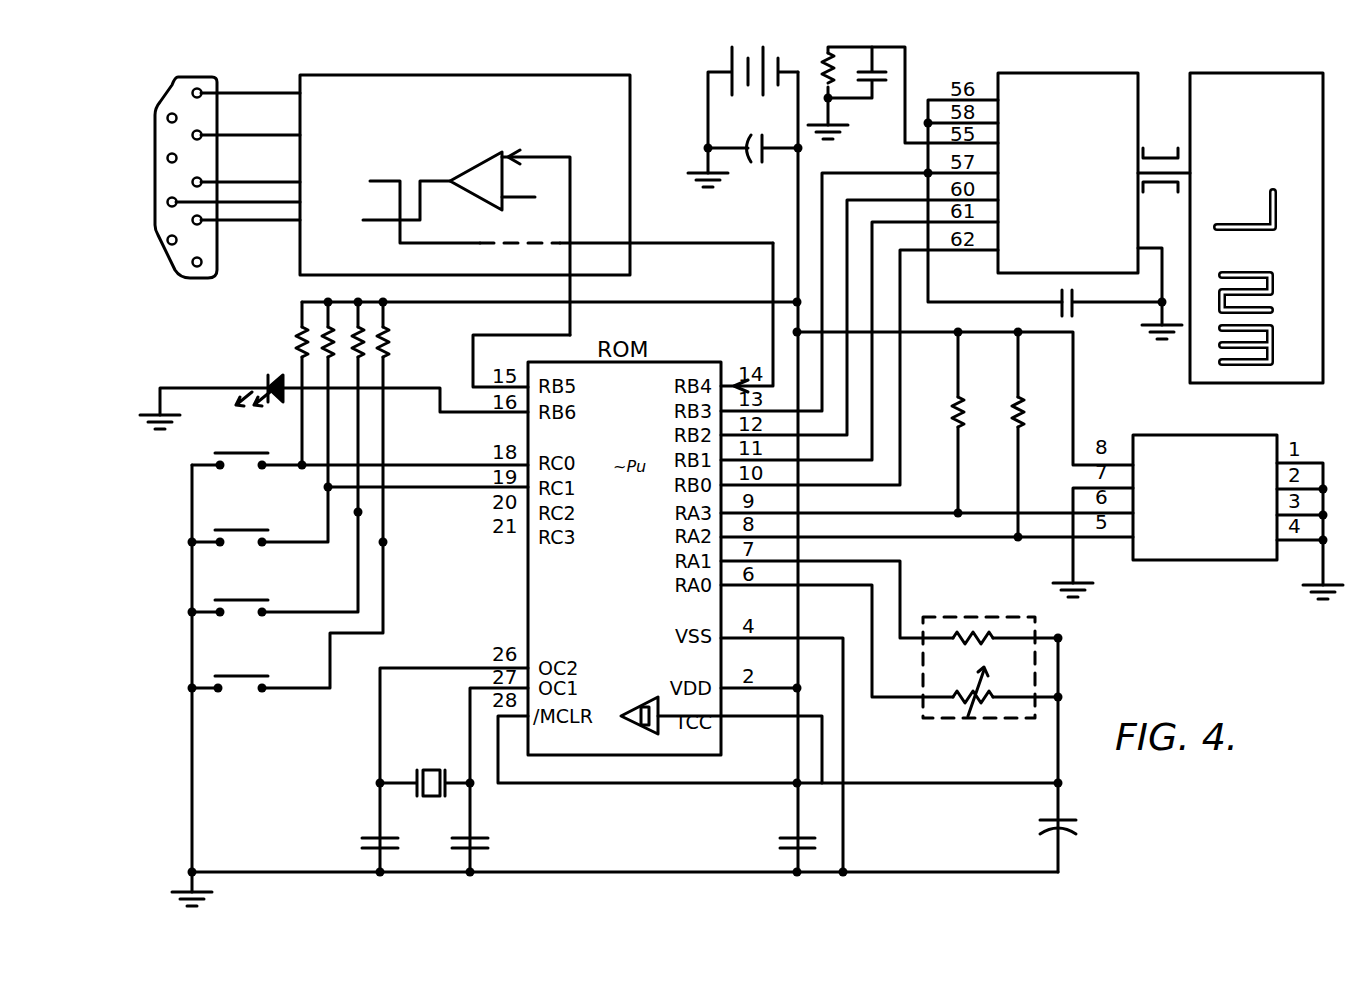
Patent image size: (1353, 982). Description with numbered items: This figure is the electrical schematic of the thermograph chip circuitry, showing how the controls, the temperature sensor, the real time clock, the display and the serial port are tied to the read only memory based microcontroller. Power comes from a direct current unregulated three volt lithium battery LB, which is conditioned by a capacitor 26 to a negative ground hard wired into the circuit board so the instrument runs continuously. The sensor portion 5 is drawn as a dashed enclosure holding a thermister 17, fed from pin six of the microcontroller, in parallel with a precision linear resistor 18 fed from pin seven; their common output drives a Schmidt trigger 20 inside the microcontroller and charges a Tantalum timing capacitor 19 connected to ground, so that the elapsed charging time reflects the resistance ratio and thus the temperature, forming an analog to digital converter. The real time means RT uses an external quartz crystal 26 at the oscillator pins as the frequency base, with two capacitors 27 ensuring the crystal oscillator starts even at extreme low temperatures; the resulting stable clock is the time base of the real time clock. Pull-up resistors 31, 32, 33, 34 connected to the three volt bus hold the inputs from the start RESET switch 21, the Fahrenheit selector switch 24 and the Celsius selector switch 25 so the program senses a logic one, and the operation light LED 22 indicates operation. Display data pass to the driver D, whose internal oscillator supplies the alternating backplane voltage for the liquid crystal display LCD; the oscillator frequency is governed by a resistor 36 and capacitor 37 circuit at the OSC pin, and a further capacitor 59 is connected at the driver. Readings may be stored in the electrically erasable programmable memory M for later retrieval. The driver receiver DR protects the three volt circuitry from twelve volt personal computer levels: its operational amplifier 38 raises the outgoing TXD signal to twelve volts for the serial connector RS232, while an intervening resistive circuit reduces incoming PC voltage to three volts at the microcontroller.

The RS232 connector port RS232 is at (205, 62).
The driver receiver DR is at (512, 86).
The operational amplifier 38 is at (495, 160).
The battery LB is at (712, 70).
The capacitor / quartz crystal 26 is at (556, 465).
The resistor 36 is at (822, 62).
The capacitor 37 is at (882, 70).
The driver D is at (1080, 70).
The capacitor 59 is at (1122, 281).
The liquid crystal display LCD is at (1270, 71).
The pull-up resistor 31 is at (290, 342).
The pull-up resistor 32 is at (315, 330).
The pull-up resistor 33 is at (368, 330).
The pull-up resistor 34 is at (393, 342).
The operation light LED 22 is at (250, 382).
The start RESET switch 21 is at (205, 450).
The Fahrenheit selector switch 24 is at (200, 595).
The Celsius selector switch 25 is at (220, 662).
The real time means RT is at (392, 768).
The capacitor 27 is at (375, 834).
The Schmidt trigger 20 is at (650, 735).
The sensor 5 is at (994, 664).
The precision linear resistor 18 is at (995, 632).
The thermister 17 is at (962, 712).
The Tantalum timing capacitor 19 is at (1068, 815).
The EEPROM M is at (1180, 557).